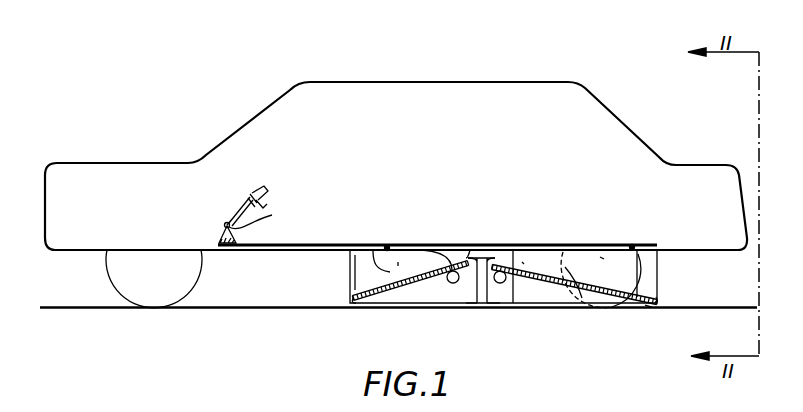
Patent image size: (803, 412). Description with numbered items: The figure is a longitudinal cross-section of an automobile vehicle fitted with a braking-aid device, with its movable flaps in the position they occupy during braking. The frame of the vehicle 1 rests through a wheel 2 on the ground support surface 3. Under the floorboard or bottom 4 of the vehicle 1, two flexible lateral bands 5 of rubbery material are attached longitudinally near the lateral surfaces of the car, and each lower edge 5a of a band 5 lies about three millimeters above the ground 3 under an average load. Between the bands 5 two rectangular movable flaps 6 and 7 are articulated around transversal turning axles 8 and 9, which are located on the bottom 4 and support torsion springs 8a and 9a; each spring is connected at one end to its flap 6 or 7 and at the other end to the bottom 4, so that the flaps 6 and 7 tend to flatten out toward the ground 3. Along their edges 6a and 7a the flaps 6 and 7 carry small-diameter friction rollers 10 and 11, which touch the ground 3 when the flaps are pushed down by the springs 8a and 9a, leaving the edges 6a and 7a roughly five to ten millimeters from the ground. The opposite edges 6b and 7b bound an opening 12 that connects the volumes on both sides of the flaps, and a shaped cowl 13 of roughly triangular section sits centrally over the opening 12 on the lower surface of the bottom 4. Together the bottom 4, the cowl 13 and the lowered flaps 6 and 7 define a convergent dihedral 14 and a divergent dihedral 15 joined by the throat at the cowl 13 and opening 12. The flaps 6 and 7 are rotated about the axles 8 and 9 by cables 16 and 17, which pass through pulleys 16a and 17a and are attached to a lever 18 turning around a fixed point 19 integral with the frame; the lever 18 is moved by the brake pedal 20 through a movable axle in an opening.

The frame of automobile vehicle 1 is at (147, 175).
The wheel 2 is at (117, 262).
The ground support surface 3 is at (105, 310).
The floorboard or bottom 4 is at (697, 250).
The flexible lateral band 5 is at (556, 295).
The lower edge of band 5a is at (430, 299).
The movable flap 6 is at (412, 280).
The edge of flap 6a is at (355, 258).
The edge of flap 6b is at (469, 297).
The movable flap 7 is at (565, 267).
The edge of flap 7a is at (650, 306).
The edge of flap 7b is at (497, 300).
The transversal turning axle 8 is at (472, 250).
The torsion spring 8a is at (451, 271).
The transversal turning axle 9 is at (537, 272).
The torsion spring 9a is at (522, 262).
The friction roller 10 is at (355, 305).
The friction roller 11 is at (655, 302).
The opening 12 is at (481, 304).
The shaped cowl 13 is at (489, 250).
The convergent dihedral 14 is at (398, 262).
The divergent dihedral 15 is at (602, 257).
The cable 16 is at (348, 250).
The pulley 16a is at (387, 246).
The cable 17 is at (656, 250).
The pulley 17a is at (636, 246).
The lever 18 is at (263, 216).
The fixed point 19 is at (224, 224).
The brake pedal 20 is at (257, 189).